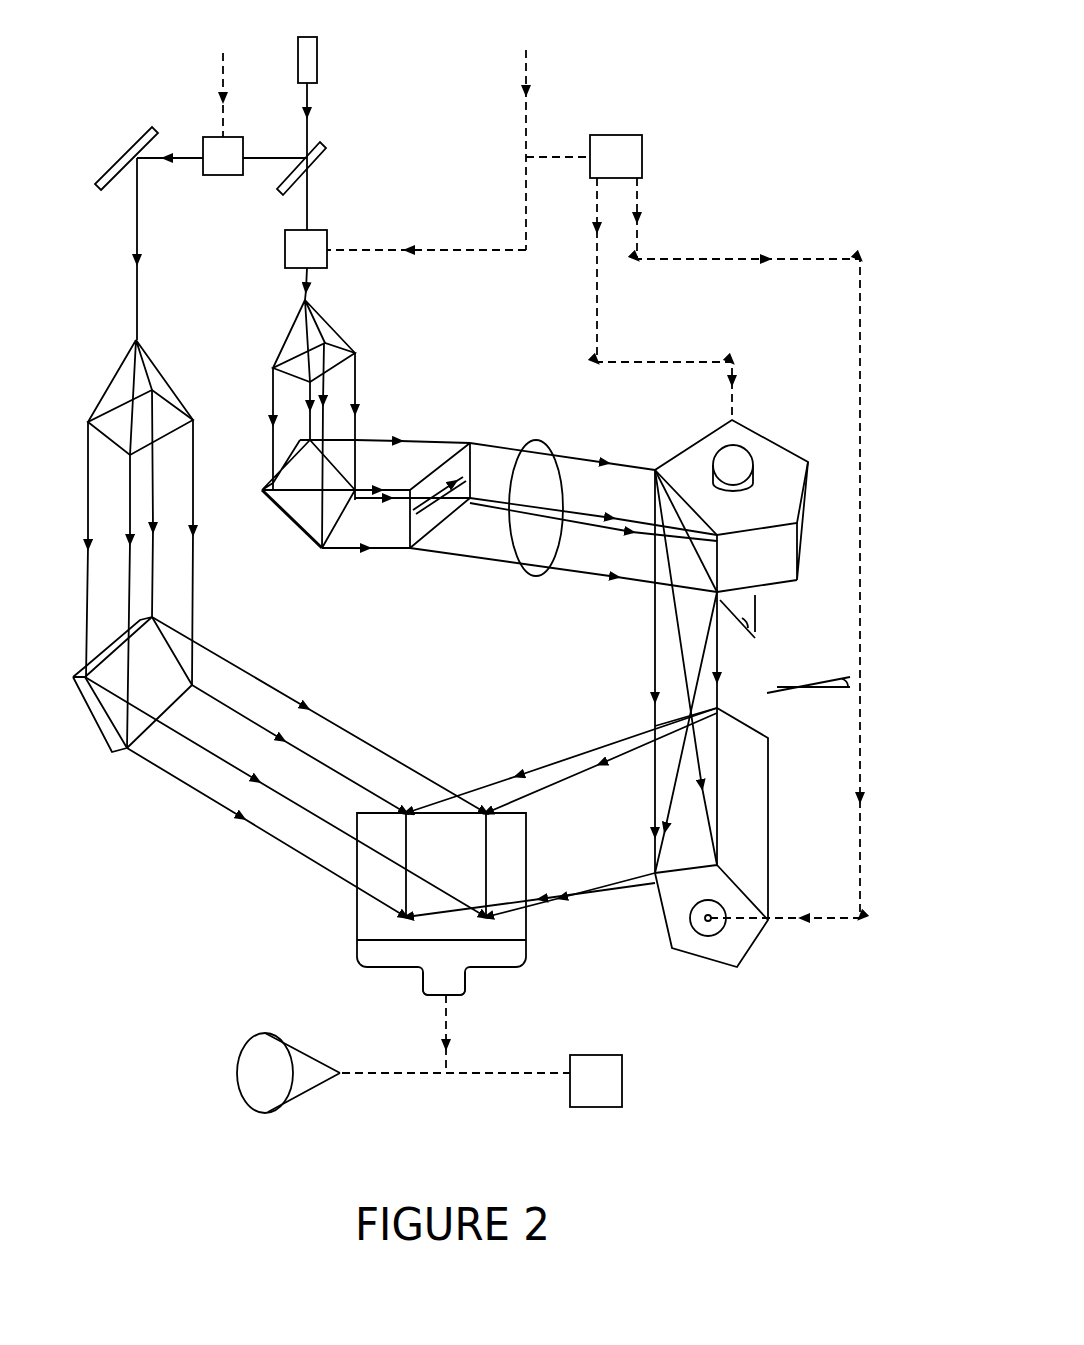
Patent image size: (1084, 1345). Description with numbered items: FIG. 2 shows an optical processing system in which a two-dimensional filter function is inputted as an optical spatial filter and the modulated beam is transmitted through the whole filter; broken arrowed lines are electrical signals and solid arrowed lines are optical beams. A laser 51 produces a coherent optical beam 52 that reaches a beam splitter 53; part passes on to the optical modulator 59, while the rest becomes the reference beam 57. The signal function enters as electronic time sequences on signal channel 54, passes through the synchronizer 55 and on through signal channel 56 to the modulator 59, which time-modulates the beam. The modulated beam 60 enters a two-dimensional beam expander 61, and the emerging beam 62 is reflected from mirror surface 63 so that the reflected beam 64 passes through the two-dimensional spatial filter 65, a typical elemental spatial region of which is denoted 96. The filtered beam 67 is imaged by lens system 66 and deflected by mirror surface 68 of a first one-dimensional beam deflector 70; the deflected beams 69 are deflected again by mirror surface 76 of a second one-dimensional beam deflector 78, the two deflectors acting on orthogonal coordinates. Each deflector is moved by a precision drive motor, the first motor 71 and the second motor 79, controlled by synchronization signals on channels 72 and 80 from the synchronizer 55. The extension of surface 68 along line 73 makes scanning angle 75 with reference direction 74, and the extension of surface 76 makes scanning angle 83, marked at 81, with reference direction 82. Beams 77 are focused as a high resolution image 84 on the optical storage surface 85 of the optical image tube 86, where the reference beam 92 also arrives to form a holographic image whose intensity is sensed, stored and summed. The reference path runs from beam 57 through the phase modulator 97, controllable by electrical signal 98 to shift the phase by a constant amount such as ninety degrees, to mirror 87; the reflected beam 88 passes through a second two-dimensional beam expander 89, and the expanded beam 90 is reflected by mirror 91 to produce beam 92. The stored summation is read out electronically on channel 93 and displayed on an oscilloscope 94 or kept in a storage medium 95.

The laser 51 is at (325, 60).
The coherent optical beam 52 is at (326, 156).
The beam splitter 53 is at (317, 168).
The signal channel 54 is at (558, 150).
The synchronizer 55 is at (616, 156).
The signal channel 56 is at (426, 234).
The reference beam 57 is at (222, 175).
The optical modulator 59 is at (306, 249).
The modulated beam 60 is at (324, 284).
The two dimensional beam expander 61 is at (319, 341).
The modulated beam 62 is at (315, 445).
The mirror surface 63 is at (308, 504).
The reflected beam 64 is at (396, 493).
The two dimensional spatial filter 65 is at (440, 495).
The lens system 66 is at (536, 523).
The modulated optical beam 67 is at (563, 517).
The mirror surface 68 is at (686, 531).
The deflected beams 69 is at (690, 671).
The first one-dimensional optical beam deflector 70 is at (731, 506).
The precision drive motor 71 is at (733, 468).
The channel 72 is at (644, 299).
The line 73 is at (753, 630).
The reference direction 74 is at (771, 610).
The scanning angle 75 is at (737, 610).
The mirror surface 76 is at (711, 837).
The beams 77 is at (561, 819).
The second one-dimensional beam deflector 78 is at (694, 910).
The drive shaft of second prism 79 is at (708, 918).
The channel 80 is at (748, 548).
The angle 81 is at (838, 668).
The reference direction 82 is at (813, 700).
The scanning angle 83 is at (808, 672).
The image 84 is at (446, 865).
The optical storage surface 85 is at (422, 904).
The holder base 86 is at (427, 984).
The mirror 87 is at (123, 158).
The beam 88 is at (114, 249).
The two dimensional beam expander 89 is at (140, 397).
The expanded beam 90 is at (141, 569).
The mirror 91 is at (132, 695).
The reference beam 92 is at (285, 767).
The channel 93 is at (456, 1034).
The oscilloscope 94 is at (289, 1073).
The storage medium 95 is at (596, 1081).
The elemental spatial region 96 is at (460, 482).
The optical phase modulator 97 is at (223, 170).
The electrical signal 98 is at (203, 93).